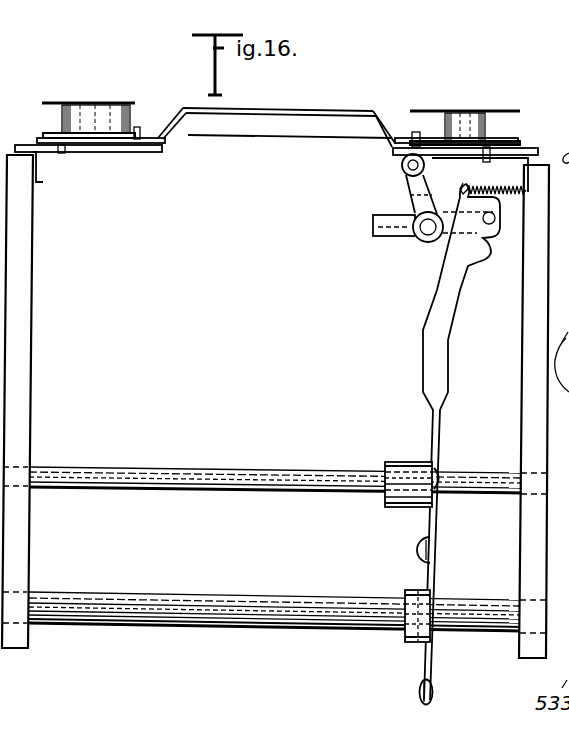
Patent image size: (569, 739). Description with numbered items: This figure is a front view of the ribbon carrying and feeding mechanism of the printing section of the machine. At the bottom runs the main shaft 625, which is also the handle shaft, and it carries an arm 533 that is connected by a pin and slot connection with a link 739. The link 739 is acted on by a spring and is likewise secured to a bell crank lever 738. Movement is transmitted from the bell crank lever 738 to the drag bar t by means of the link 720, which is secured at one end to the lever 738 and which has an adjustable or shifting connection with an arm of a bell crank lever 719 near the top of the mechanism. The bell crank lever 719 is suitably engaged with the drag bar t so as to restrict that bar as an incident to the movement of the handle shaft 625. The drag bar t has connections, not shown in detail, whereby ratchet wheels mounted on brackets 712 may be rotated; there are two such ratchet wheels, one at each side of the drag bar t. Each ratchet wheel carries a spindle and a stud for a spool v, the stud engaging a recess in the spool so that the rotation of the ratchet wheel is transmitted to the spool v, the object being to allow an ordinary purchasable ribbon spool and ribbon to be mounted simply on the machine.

The bracket 712 is at (38, 176).
The bell crank lever 719 is at (427, 245).
The link 720 is at (448, 358).
The bell crank lever 738 is at (433, 518).
The link 739 is at (431, 575).
The main shaft 625 is at (300, 603).
The arm 533 is at (426, 668).
The drag bar t is at (303, 111).
The spool v is at (132, 106).